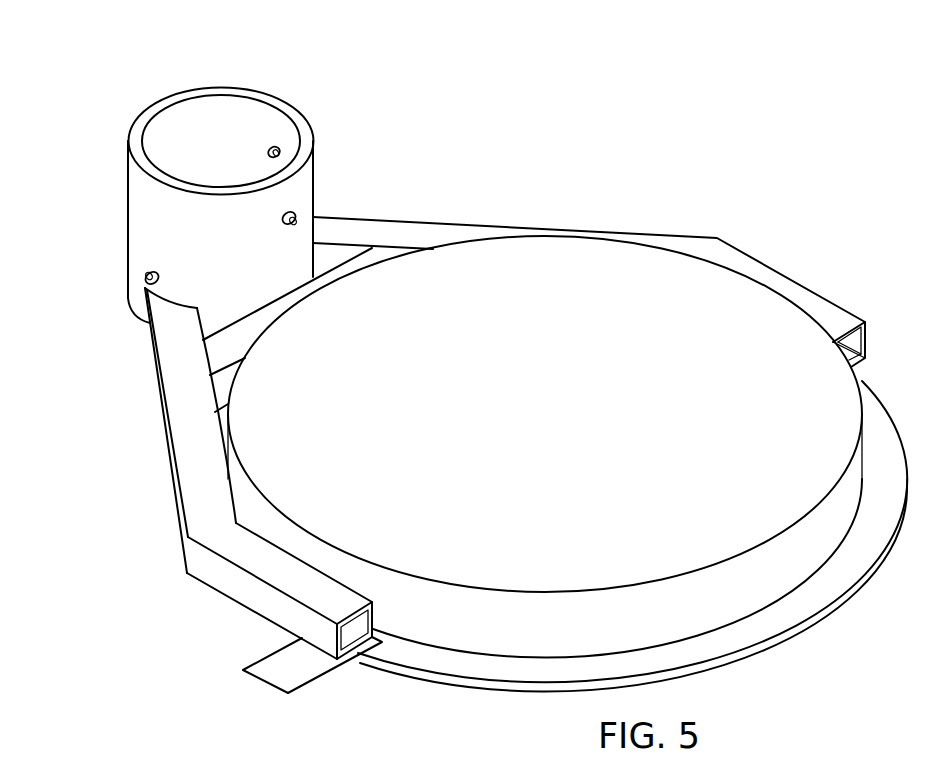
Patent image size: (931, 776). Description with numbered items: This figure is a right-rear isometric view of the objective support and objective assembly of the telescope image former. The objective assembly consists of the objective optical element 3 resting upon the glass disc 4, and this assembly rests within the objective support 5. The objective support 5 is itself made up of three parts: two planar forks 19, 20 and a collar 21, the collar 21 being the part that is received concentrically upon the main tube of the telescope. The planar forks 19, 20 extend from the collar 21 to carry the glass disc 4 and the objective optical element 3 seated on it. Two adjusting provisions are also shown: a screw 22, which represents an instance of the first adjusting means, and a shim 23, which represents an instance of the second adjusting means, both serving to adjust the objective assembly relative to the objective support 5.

The objective optical element 3 is at (526, 428).
The glass disc 4 is at (837, 618).
The objective support 5 is at (357, 185).
The planar fork 19 is at (628, 225).
The planar fork 20 is at (172, 500).
The collar 21 is at (173, 84).
The screw 22 is at (265, 219).
The shim 23 is at (240, 657).